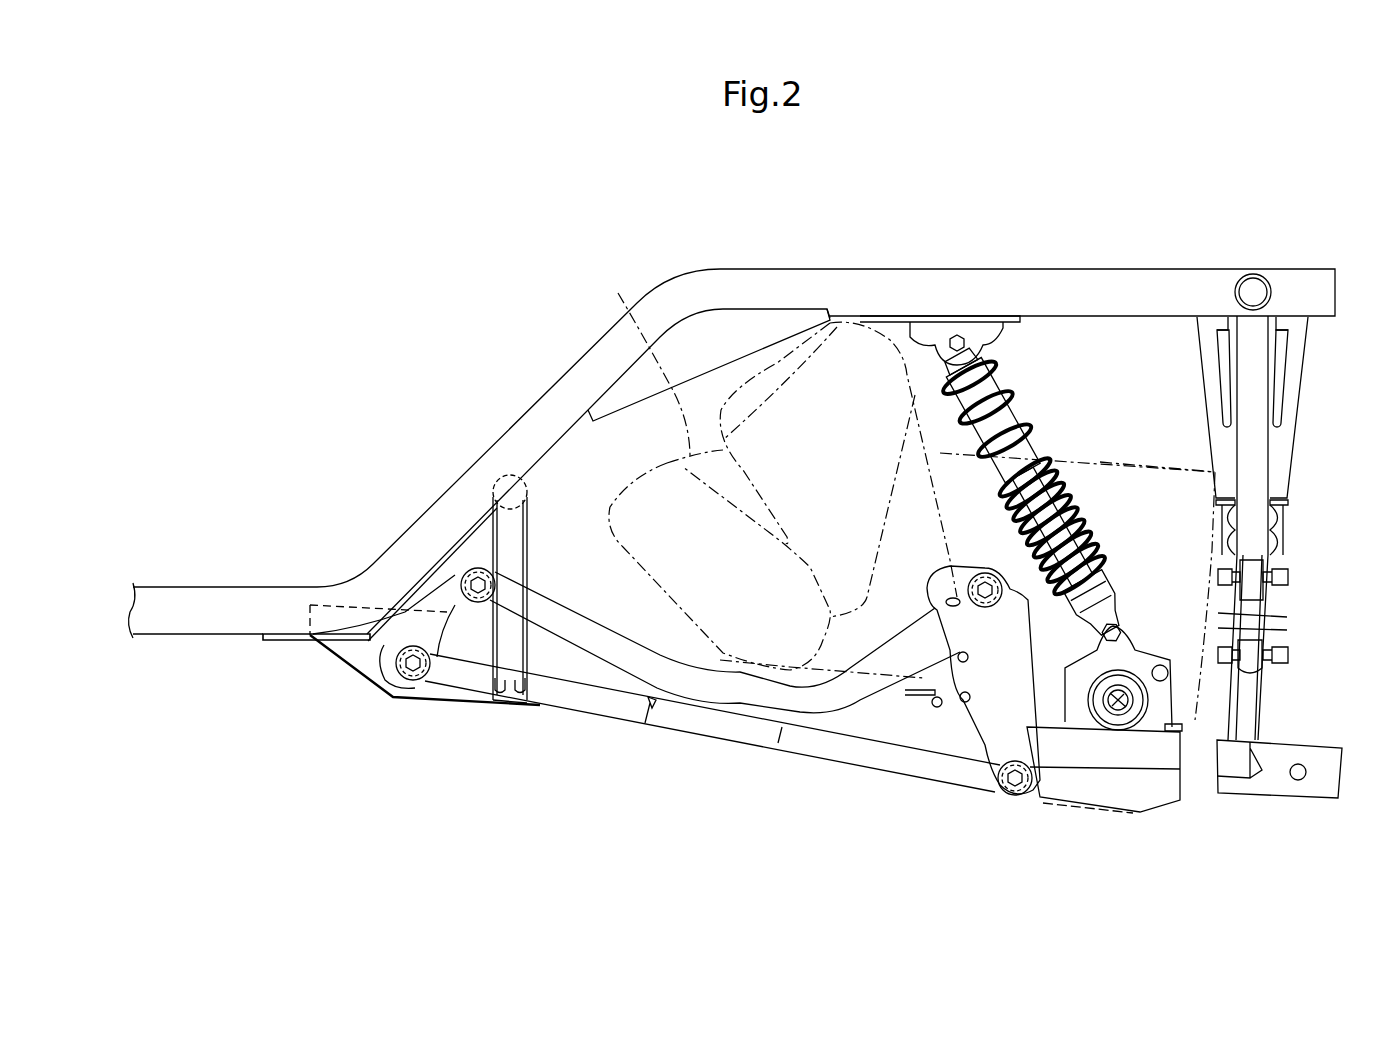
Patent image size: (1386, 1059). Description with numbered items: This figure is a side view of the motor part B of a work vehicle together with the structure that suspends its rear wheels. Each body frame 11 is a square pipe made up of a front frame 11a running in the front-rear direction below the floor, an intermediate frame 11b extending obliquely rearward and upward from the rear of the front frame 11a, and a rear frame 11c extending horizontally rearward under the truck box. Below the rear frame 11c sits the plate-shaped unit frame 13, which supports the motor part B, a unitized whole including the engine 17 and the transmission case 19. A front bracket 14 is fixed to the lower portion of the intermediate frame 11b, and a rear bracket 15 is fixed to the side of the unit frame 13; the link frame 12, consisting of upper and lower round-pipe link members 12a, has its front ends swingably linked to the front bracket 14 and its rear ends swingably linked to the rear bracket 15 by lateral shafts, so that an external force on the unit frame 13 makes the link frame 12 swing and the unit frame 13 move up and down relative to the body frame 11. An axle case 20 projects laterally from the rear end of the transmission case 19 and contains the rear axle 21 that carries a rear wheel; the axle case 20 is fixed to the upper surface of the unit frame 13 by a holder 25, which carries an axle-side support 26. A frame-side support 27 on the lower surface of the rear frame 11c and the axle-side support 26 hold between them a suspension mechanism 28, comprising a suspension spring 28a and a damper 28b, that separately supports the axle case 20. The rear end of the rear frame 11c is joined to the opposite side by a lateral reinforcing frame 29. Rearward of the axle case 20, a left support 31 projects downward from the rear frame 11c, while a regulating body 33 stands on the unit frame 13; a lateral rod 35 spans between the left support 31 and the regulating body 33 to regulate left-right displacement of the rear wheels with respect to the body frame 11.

The body frame 11 is at (752, 268).
The front frame 11a is at (232, 620).
The intermediate frame 11b is at (510, 435).
The rear frame 11c is at (1070, 285).
The link frame 12 is at (660, 738).
The link member 12a is at (572, 628).
The unit frame 13 is at (1325, 745).
The front bracket 14 is at (428, 597).
The rear bracket 15 is at (993, 703).
The engine 17 is at (709, 343).
The transmission case 19 is at (1135, 462).
The axle case 20 is at (1150, 765).
The rear axle 21 is at (1122, 697).
The holder 25 is at (1173, 728).
The axle-side support 26 is at (1083, 672).
The frame-side support 27 is at (978, 345).
The suspension mechanism 28 is at (1125, 355).
The suspension spring 28a is at (1040, 440).
The damper 28b is at (1008, 403).
The lateral reinforcing frame 29 is at (1262, 285).
The left support 31 is at (1255, 457).
The regulating body 33 is at (1268, 705).
The lateral rod 35 is at (1250, 650).
The motor part B is at (895, 210).